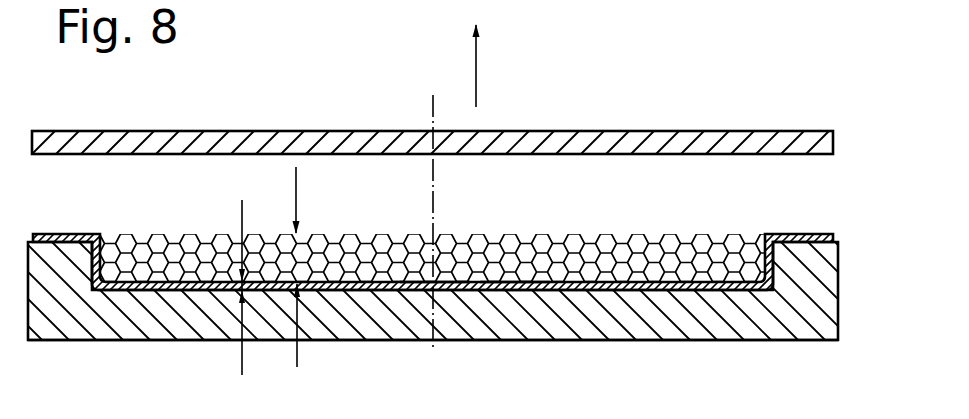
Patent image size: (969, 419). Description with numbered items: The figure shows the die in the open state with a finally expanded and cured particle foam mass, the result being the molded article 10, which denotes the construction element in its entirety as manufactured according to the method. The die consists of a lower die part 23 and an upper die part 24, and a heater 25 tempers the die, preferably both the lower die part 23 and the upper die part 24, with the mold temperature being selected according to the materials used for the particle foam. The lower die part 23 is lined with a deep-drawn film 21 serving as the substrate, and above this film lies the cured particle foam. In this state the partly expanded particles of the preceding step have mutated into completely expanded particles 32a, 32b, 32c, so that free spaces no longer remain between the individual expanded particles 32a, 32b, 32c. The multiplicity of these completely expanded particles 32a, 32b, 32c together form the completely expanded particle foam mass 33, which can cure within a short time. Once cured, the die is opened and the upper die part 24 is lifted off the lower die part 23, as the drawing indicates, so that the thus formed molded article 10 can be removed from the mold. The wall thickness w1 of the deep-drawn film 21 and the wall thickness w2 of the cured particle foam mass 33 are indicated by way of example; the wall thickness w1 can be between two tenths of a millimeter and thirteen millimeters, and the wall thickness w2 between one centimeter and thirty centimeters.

The molded article 10 is at (709, 207).
The deep-drawn film 21 is at (173, 292).
The lower die part 23 is at (703, 318).
The upper die part 24 is at (352, 142).
The heater 25 is at (760, 7).
The completely expanded particle foam mass 33 is at (567, 253).
The completely expanded particle 32a is at (370, 264).
The completely expanded particle 32b is at (390, 254).
The completely expanded particle 32c is at (408, 266).
The wall thickness of the deep-drawn film w1 is at (235, 304).
The wall thickness of the cured-particle foam mass w2 is at (300, 288).